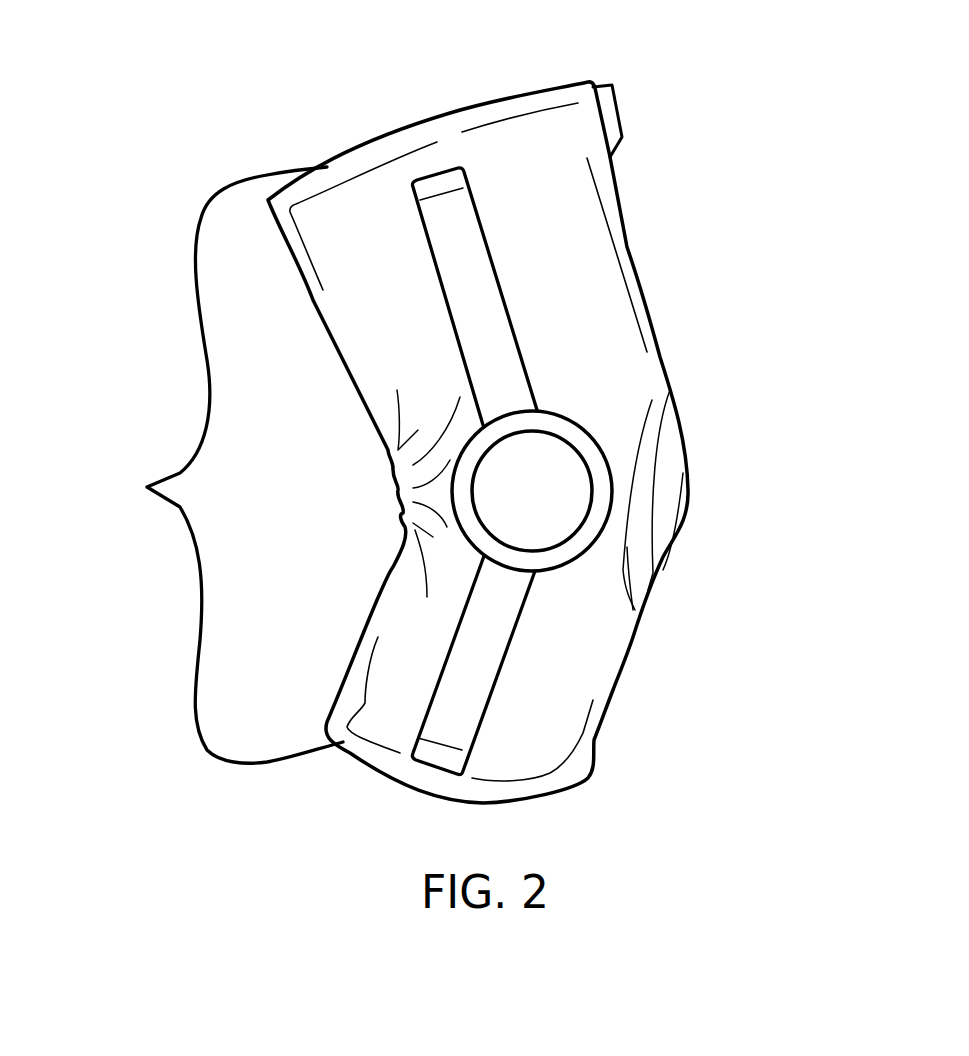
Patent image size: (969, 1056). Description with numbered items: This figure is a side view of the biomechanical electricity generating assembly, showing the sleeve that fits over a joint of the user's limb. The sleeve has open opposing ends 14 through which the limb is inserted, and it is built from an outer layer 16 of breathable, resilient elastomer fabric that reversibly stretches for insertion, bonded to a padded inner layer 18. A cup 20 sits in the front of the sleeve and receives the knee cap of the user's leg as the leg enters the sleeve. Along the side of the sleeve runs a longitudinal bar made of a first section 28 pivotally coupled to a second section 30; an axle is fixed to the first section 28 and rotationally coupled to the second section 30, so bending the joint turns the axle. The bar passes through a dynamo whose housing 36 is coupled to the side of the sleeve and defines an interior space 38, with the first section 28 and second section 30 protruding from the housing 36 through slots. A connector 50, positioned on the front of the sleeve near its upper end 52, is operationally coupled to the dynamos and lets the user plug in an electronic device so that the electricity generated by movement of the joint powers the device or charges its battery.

The opposing ends 14 is at (690, 665).
The outer layer 16 is at (563, 243).
The inner layer 18 is at (595, 297).
The cup 20 is at (668, 493).
The first section 28 is at (463, 307).
The second section 30 is at (463, 638).
The housing 36 is at (583, 430).
The interior space 38 is at (575, 478).
The connector 50 is at (617, 110).
The upper end 52 is at (425, 125).